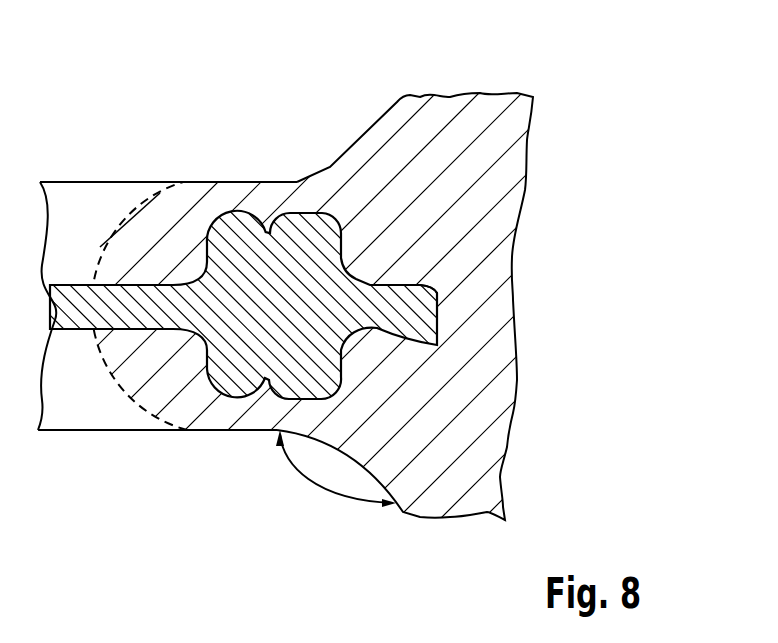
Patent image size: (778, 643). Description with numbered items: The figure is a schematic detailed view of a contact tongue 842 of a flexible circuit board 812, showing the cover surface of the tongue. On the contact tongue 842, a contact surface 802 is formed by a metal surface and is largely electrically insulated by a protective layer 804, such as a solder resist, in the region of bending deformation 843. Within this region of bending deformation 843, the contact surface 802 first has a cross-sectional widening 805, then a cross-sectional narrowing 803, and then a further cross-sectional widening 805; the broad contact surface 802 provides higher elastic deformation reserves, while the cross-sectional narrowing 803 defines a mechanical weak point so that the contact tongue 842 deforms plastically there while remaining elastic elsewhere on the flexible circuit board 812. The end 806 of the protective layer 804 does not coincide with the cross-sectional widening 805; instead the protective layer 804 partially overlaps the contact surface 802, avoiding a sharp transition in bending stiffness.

The contact surface 802 is at (427, 290).
The cross-sectional narrowing 803 is at (268, 413).
The protective layer 804 is at (496, 352).
The cross-sectional widening 805 is at (192, 427).
The end of protective layer 806 is at (146, 202).
The flexible circuit board 812 is at (482, 118).
The contact tongue 842 is at (100, 207).
The region of bending deformation 843 is at (357, 147).